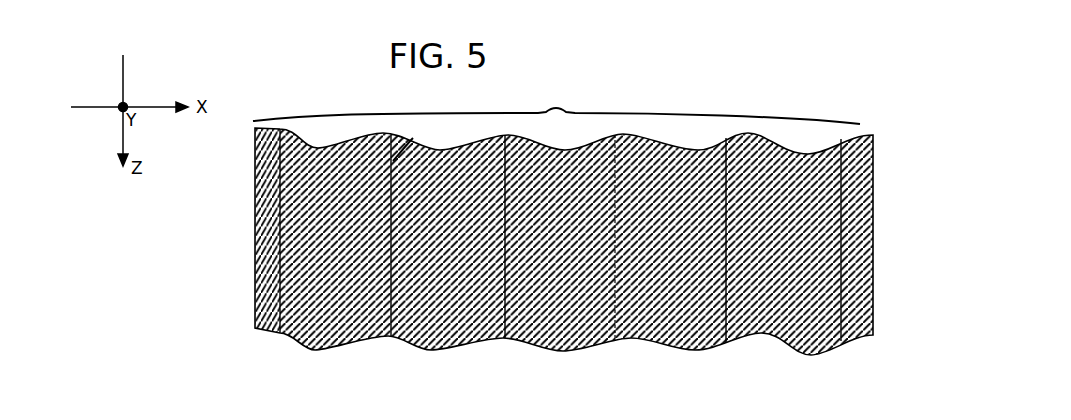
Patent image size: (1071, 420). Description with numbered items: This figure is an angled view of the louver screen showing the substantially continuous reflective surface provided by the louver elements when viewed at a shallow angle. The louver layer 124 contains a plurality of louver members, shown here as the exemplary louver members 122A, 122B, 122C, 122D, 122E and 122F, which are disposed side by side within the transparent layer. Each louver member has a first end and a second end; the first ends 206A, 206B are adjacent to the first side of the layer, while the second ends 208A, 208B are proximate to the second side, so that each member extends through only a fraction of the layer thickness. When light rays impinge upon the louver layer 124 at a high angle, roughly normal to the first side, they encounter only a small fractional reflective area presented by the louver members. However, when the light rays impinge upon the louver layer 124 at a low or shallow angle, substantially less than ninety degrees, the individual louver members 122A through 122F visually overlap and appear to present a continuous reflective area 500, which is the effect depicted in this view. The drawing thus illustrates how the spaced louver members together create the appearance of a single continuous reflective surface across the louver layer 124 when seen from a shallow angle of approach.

The louver layer 124 is at (284, 123).
The continuous reflective area 500 is at (556, 103).
The louver member 122A is at (330, 330).
The louver member 122B is at (453, 327).
The louver member 122C is at (563, 330).
The louver member 122D is at (683, 328).
The louver member 122E is at (803, 328).
The louver member 122F is at (846, 314).
The first end 206A is at (265, 309).
The first end 206B is at (405, 130).
The second end 208A is at (385, 153).
The second end 208B is at (490, 312).